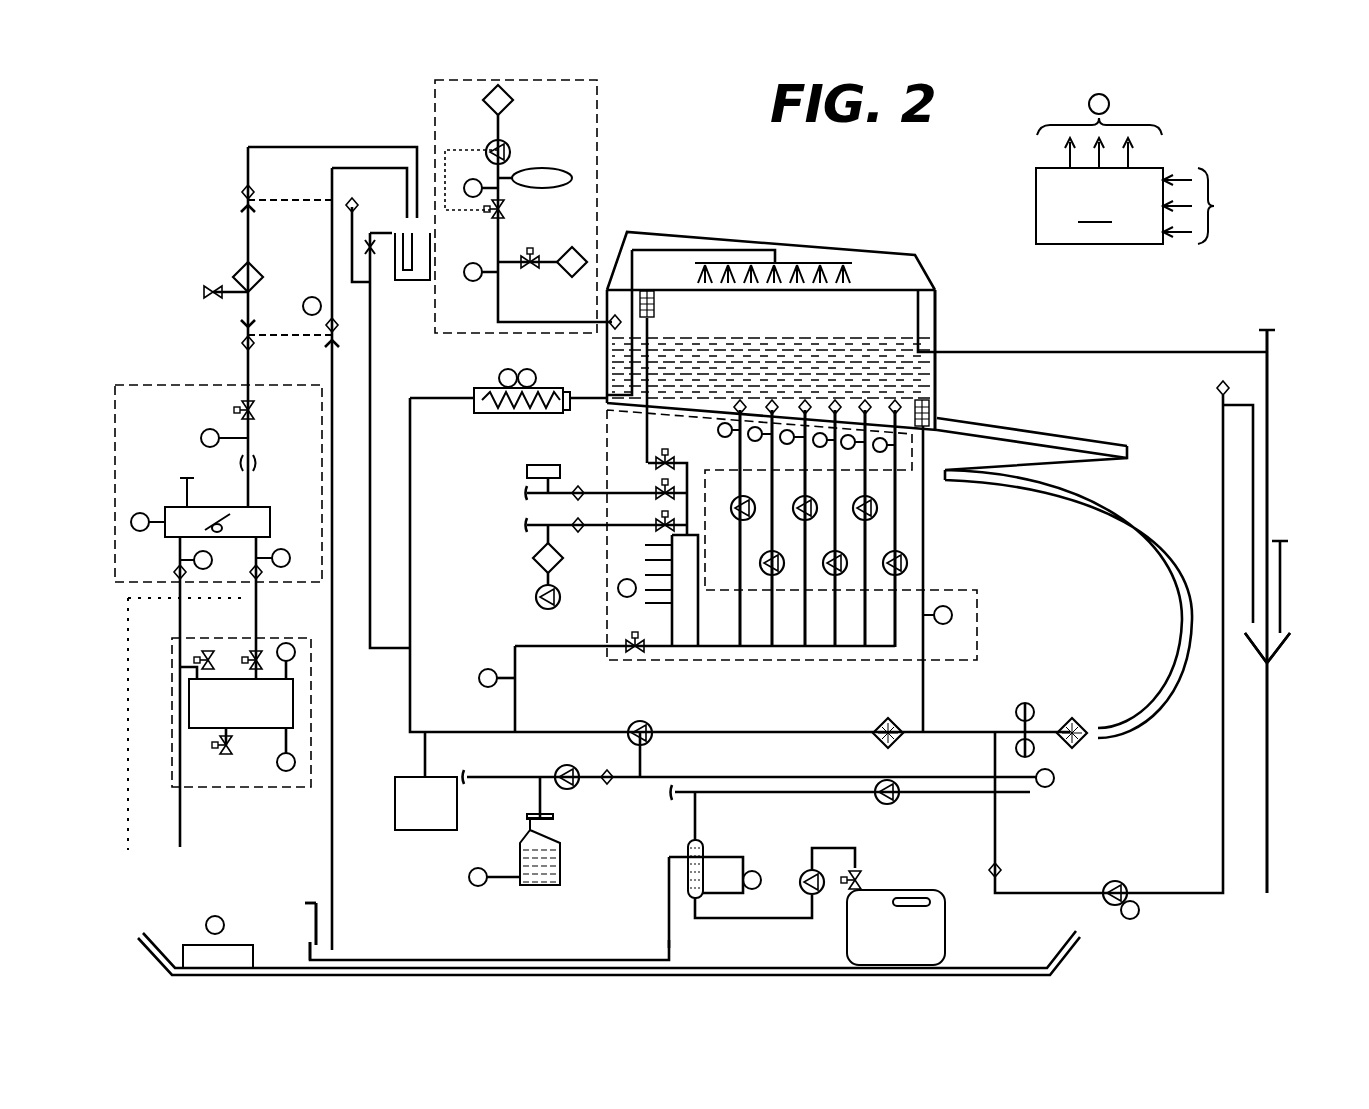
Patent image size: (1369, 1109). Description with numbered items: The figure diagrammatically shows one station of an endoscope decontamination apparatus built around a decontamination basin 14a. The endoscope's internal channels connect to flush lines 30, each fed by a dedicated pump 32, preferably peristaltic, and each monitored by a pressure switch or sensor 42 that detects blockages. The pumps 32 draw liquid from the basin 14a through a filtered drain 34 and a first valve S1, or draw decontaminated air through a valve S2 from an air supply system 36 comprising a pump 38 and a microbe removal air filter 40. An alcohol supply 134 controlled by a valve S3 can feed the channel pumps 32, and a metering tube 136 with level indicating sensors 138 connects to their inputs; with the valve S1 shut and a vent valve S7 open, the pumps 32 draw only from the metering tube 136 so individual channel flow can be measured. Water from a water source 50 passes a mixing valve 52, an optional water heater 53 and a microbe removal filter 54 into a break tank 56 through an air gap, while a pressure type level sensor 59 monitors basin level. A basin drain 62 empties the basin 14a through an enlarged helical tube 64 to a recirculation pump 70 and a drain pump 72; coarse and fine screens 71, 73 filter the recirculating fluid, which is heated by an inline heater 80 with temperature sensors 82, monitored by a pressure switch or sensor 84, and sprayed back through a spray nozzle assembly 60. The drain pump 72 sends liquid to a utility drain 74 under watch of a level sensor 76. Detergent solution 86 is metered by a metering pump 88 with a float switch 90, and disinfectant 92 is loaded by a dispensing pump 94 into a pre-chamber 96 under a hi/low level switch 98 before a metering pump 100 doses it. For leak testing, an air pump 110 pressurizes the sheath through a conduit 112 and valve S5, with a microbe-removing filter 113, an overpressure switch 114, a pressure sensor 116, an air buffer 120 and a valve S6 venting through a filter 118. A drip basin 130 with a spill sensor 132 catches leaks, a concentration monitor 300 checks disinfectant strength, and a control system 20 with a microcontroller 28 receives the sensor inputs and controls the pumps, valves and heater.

The decontamination basin 14a is at (935, 312).
The control system 20 is at (1118, 266).
The microcontroller 28 is at (1099, 206).
The flush lines 30 is at (945, 512).
The pumps 32 is at (722, 598).
The filtered drain 34 is at (935, 410).
The air supply system 36 is at (518, 624).
The pump 38 is at (536, 595).
The microbe removal air filter 40 is at (537, 553).
The pressure switch or sensor 42 is at (893, 403).
The water source 50 is at (114, 880).
The mixing valve 52 is at (268, 523).
The water heater 53 is at (270, 786).
The microbe removal filter 54 is at (257, 268).
The break tank 56 is at (405, 280).
The pressure type level sensor 59 is at (953, 615).
The spray nozzle assembly 60 is at (840, 262).
The basin drain 62 is at (940, 420).
The enlarged helical tube 64 is at (1120, 448).
The recirculation pump 70 is at (646, 720).
The coarse screen 71 is at (1082, 745).
The drain pump 72 is at (1125, 882).
The fine screen 73 is at (876, 740).
The utility drain 74 is at (1275, 655).
The level sensor 76 is at (1033, 797).
The inline heater 80 is at (480, 413).
The temperature sensors 82 is at (502, 377).
The pressure switch or sensor 84 is at (480, 686).
The detergent solution 86 is at (560, 865).
The metering pump 88 is at (555, 770).
The float switch 90 is at (470, 885).
The disinfectant 92 is at (935, 930).
The dispensing pump 94 is at (810, 870).
The pre-chamber 96 is at (688, 890).
The hi/low level switch 98 is at (750, 870).
The metering pump 100 is at (892, 805).
The air pump 110 is at (512, 152).
The conduit 112 is at (585, 320).
The microbe-removing filter 113 is at (512, 100).
The overpressure switch 114 is at (471, 178).
The pressure sensor 116 is at (470, 283).
The filter 118 is at (580, 250).
The air buffer 120 is at (570, 178).
The drip basin 130 is at (280, 960).
The spill sensor 132 is at (237, 950).
The alcohol supply 134 is at (525, 475).
The metering tube 136 is at (692, 630).
The level indicating sensors 138 is at (626, 598).
The concentration monitor 300 is at (420, 833).
The first valve S1 is at (637, 656).
The valve S2 is at (655, 527).
The valve S3 is at (655, 492).
The valve S5 is at (493, 216).
The valve S6 is at (530, 255).
The vent valve S7 is at (655, 462).